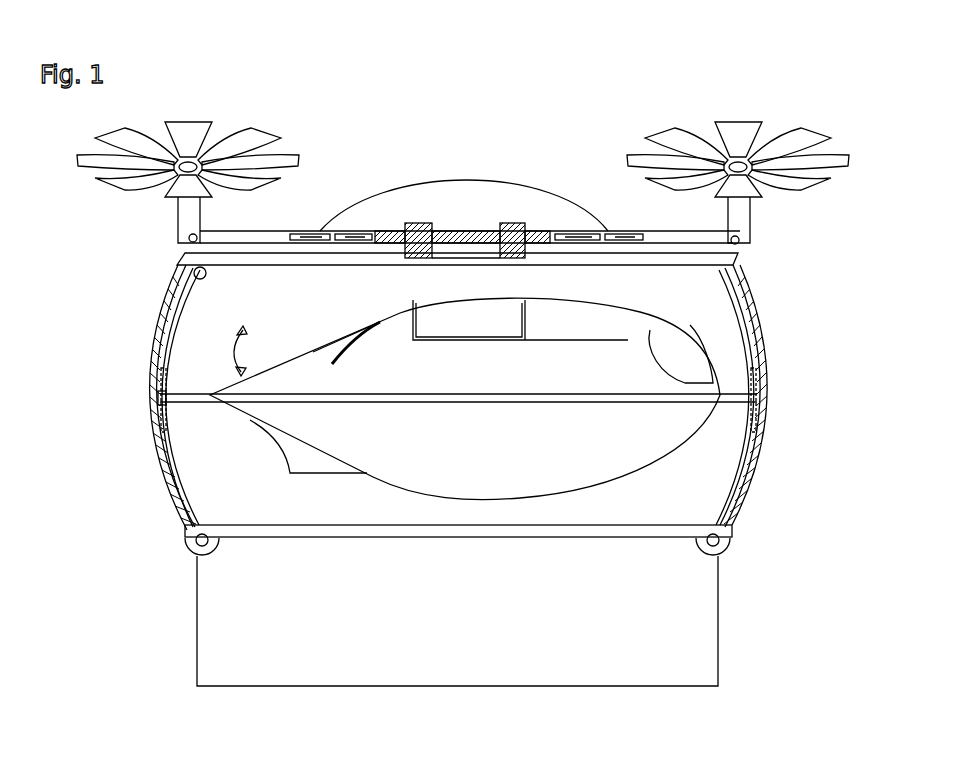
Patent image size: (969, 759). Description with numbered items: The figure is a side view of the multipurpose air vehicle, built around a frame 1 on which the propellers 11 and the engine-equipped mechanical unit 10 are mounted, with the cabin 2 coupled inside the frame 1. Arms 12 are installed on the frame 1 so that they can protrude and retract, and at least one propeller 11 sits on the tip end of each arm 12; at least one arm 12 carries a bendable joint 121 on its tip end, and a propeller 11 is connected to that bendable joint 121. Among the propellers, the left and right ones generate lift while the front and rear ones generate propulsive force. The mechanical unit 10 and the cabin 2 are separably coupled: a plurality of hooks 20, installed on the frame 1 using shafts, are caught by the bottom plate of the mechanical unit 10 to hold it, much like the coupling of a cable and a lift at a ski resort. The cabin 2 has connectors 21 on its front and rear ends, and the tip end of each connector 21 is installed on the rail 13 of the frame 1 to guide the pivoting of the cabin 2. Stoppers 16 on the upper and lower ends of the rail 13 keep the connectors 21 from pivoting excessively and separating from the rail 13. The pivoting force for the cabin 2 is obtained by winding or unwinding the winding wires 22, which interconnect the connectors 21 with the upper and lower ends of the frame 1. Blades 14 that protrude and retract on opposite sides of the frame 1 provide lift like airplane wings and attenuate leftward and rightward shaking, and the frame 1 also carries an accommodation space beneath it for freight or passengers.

The frame 1 is at (155, 432).
The cabin 2 is at (650, 473).
The mechanical unit 10 is at (527, 188).
The propeller 11 is at (188, 122).
The arm 12 is at (275, 225).
The bendable joint 121 is at (186, 239).
The rail 13 is at (157, 345).
The blade 14 is at (716, 618).
The stopper 16 is at (165, 308).
The hook 20 is at (420, 218).
The connector 21 is at (201, 405).
The winding wire 22 is at (202, 297).